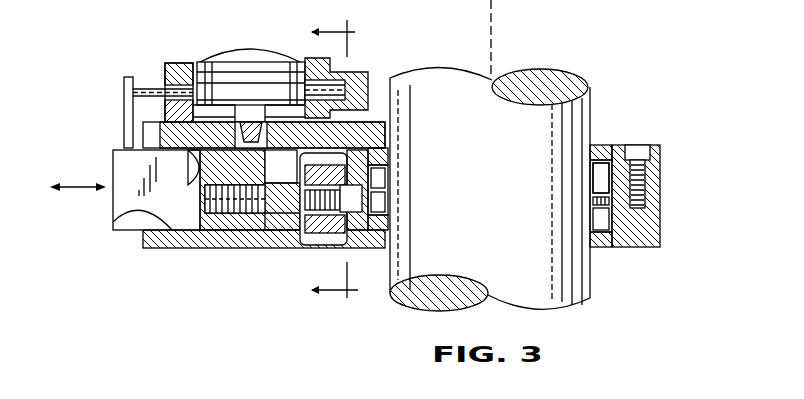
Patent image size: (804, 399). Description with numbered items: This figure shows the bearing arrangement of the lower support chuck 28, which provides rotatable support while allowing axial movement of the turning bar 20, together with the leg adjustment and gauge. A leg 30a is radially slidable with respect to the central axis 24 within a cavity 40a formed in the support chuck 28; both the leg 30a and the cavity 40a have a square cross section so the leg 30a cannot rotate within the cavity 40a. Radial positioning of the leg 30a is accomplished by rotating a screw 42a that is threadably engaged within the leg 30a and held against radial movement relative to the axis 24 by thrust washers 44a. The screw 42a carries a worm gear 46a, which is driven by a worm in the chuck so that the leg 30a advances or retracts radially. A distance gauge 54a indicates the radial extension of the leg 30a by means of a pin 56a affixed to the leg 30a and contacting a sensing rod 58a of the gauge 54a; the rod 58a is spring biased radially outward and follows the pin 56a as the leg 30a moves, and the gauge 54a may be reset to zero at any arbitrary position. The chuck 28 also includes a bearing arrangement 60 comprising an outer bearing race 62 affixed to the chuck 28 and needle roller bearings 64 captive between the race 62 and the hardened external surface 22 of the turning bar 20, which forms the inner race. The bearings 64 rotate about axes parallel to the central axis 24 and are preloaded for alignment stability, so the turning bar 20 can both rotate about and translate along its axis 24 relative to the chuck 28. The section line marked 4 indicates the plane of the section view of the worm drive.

The turning bar 20 is at (593, 108).
The external surface 22 is at (504, 144).
The central axis 24 is at (493, 50).
The lower support chuck 28 is at (250, 252).
The leg 30a is at (113, 165).
The cavity 40a is at (113, 230).
The screw 42a is at (228, 215).
The thrust washers 44a is at (314, 245).
The worm gear 46a is at (332, 250).
The distance gauge 54a is at (273, 42).
The pin 56a is at (122, 110).
The sensing rod 58a is at (157, 85).
The bearing arrangement 60 is at (597, 138).
The outer bearing race 62 is at (613, 144).
The needle roller bearings 64 is at (597, 178).
The section line 4- 4 is at (340, 161).